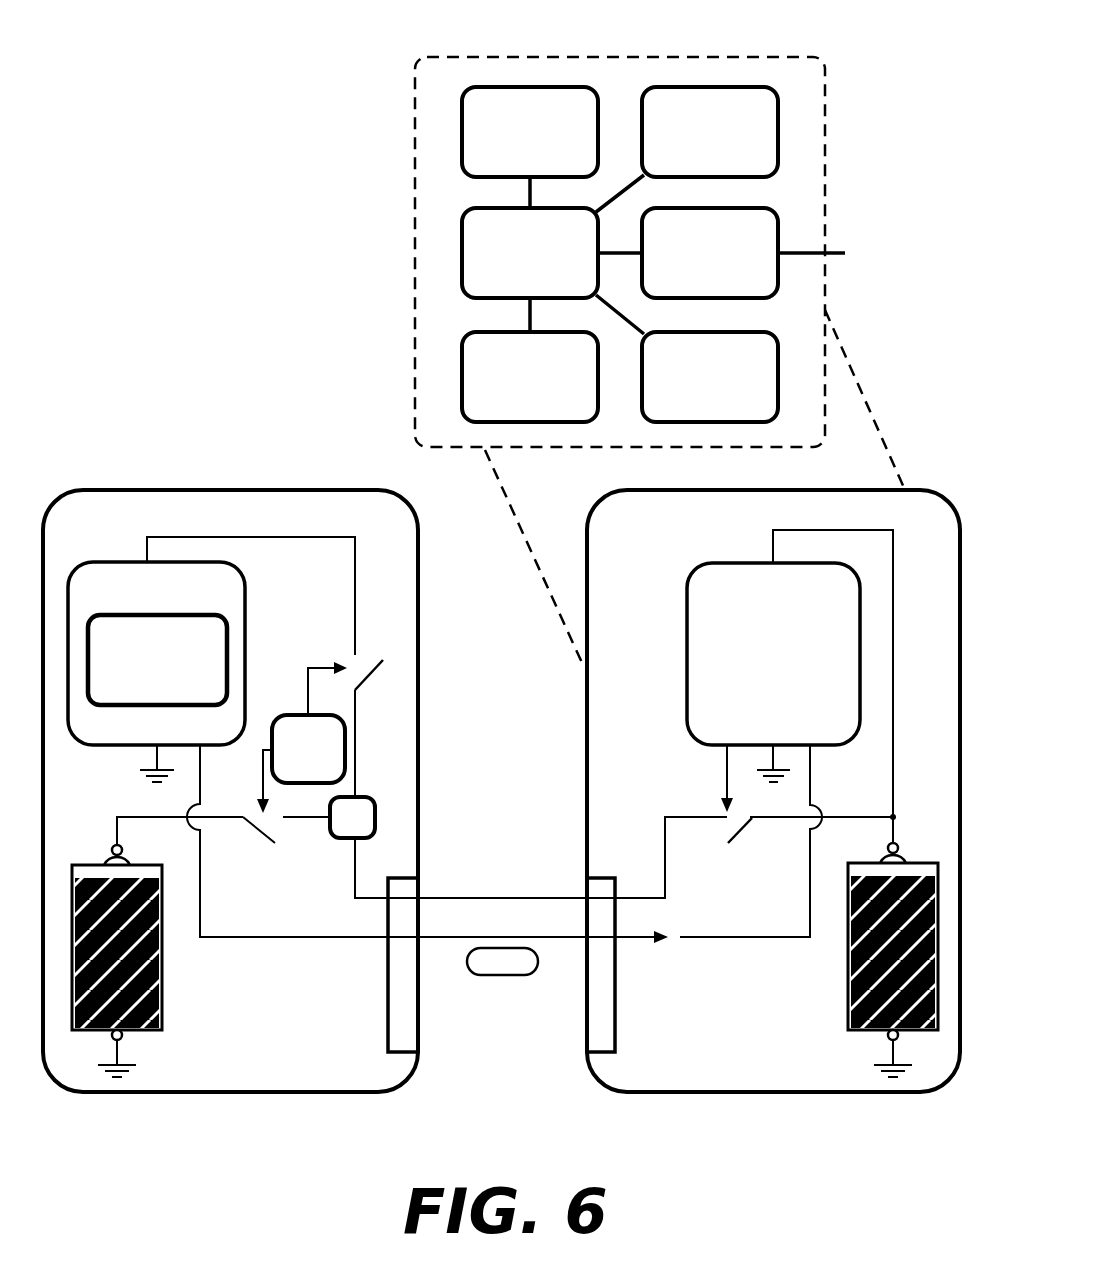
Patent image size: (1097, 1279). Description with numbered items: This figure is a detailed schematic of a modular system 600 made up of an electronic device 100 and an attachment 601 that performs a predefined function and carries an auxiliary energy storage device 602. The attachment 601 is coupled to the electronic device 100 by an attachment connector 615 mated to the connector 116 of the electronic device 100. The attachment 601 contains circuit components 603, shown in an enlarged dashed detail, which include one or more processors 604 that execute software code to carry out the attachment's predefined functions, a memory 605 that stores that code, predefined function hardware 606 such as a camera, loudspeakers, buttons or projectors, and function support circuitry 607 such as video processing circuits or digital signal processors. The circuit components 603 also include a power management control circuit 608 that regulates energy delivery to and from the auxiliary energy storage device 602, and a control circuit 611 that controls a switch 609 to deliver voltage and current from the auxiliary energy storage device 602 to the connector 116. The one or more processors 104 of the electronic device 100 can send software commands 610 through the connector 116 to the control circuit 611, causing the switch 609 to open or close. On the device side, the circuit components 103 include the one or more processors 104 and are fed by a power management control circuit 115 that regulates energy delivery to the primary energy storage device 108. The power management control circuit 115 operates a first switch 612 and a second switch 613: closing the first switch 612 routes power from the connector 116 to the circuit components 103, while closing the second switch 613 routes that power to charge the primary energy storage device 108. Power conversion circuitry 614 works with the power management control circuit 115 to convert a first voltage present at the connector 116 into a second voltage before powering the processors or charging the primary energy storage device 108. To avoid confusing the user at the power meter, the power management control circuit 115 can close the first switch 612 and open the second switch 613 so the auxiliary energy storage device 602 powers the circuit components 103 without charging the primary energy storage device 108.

The system 600 is at (190, 415).
The electronic device 100 is at (418, 620).
The attachment 601 is at (835, 490).
The circuit components 603 is at (415, 103).
The one or more processors 604 is at (462, 245).
The memory 605 is at (462, 370).
The predefined function hardware 606 is at (462, 117).
The function support circuitry 607 is at (723, 87).
The power management control circuit 608 is at (778, 360).
The control circuit 611 is at (778, 225).
The circuit components 103 is at (245, 627).
The one or more processors 104 is at (158, 615).
The primary energy storage device 108 is at (162, 978).
The power management control circuit 115 is at (345, 750).
The connector 116 is at (388, 975).
The first switch 612 is at (400, 676).
The second switch 613 is at (256, 856).
The power conversion circuitry 614 is at (375, 818).
The software commands 610 is at (502, 975).
The attachment connector 615 is at (615, 997).
The switch 609 is at (736, 853).
The auxiliary energy storage device 602 is at (848, 977).